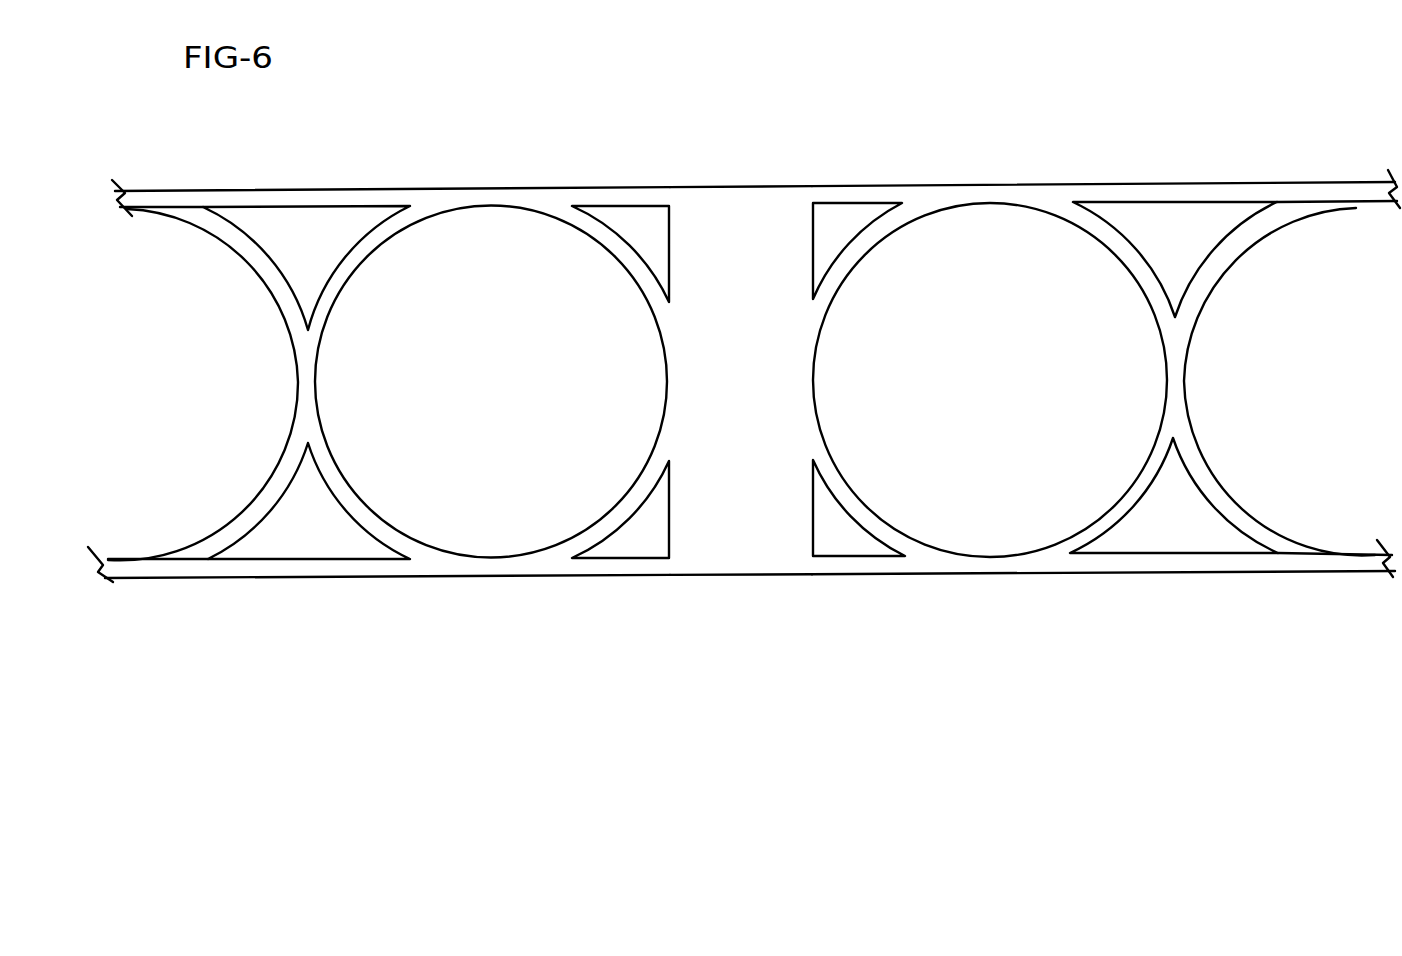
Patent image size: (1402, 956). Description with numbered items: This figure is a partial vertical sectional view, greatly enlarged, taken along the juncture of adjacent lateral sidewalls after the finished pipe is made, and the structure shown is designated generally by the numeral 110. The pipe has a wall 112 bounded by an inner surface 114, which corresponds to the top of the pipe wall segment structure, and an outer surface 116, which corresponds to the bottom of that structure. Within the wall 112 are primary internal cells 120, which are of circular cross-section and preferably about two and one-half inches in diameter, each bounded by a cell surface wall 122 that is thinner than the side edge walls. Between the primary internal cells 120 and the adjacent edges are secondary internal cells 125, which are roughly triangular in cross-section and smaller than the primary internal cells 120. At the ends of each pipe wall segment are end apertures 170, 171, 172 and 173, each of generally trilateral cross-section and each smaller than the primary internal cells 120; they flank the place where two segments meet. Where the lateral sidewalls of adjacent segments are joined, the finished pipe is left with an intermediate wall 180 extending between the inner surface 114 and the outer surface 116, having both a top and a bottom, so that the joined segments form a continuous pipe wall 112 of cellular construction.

The structural panel 110 is at (744, 386).
The wall 112 is at (756, 157).
The inner surface 114 is at (758, 157).
The outer surface 116 is at (741, 601).
The primary internal cell 120 is at (741, 437).
The cell surface wall 122 is at (298, 393).
The secondary internal cell 125 is at (740, 383).
The end aperture 170 is at (889, 200).
The end aperture 171 is at (859, 566).
The end aperture 172 is at (620, 205).
The end aperture 173 is at (620, 569).
The intermediate wall 180 is at (751, 340).